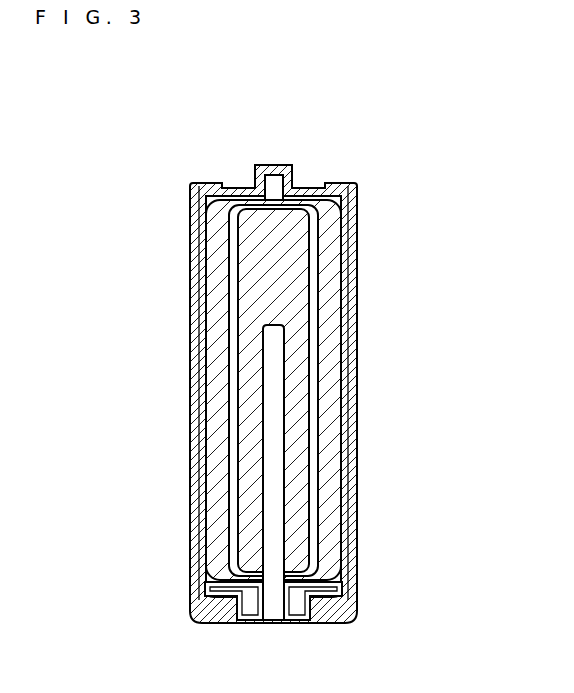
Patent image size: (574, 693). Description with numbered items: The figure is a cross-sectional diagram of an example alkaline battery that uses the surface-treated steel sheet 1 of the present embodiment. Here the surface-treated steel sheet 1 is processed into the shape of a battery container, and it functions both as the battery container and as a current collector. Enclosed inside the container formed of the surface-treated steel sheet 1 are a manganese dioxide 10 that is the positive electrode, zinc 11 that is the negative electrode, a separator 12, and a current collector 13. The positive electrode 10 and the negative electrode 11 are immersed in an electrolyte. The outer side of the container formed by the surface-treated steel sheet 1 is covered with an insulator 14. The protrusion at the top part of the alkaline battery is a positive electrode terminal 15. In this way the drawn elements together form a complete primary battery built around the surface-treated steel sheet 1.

The surface-treated steel sheet 1 is at (287, 367).
The manganese dioxide 10 is at (357, 265).
The zinc 11 is at (293, 347).
The separator 12 is at (315, 398).
The current collector 13 is at (280, 453).
The insulator 14 is at (355, 502).
The positive electrode terminal 15 is at (273, 165).